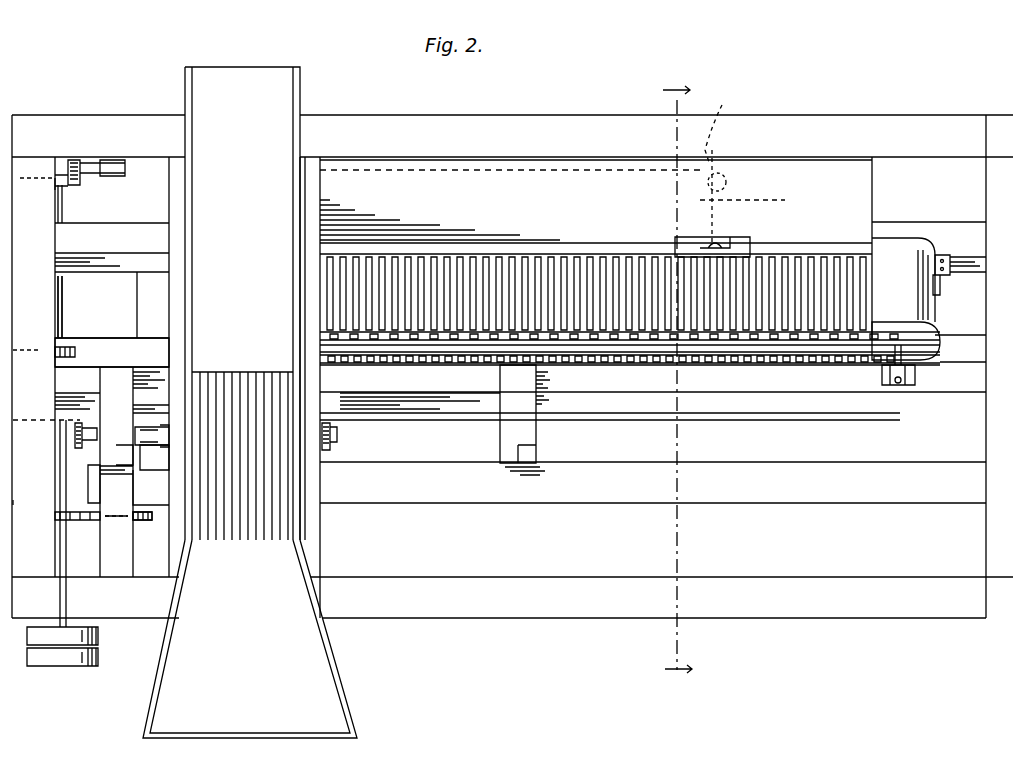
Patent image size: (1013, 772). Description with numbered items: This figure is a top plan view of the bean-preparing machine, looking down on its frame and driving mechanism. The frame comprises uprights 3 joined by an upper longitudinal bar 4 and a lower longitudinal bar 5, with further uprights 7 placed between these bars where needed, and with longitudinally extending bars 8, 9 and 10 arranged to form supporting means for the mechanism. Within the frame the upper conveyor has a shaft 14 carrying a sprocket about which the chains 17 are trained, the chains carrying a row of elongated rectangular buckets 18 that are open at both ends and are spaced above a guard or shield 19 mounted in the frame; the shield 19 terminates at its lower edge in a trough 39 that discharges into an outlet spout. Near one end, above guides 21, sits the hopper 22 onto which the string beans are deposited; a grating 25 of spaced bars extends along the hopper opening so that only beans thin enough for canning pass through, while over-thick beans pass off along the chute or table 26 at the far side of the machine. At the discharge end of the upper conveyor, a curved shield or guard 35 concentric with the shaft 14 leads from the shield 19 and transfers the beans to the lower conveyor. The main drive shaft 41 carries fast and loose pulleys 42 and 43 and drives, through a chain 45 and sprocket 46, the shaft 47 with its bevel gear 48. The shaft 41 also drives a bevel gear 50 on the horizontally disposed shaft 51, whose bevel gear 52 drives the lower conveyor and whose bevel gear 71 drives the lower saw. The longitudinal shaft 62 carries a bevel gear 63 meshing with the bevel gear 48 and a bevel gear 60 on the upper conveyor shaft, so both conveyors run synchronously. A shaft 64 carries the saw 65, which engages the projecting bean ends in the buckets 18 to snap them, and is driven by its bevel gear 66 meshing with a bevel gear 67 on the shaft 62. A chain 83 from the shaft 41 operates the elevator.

The uprights 3 is at (1003, 625).
The upper longitudinal bar 4 is at (843, 115).
The lower longitudinal bar 5 is at (677, 384).
The uprights 7 is at (602, 115).
The longitudinally extending bar 8 is at (947, 380).
The longitudinally extending bar 9 is at (963, 230).
The longitudinally extending bar 10 is at (957, 342).
The shaft 14 is at (905, 332).
The chains 17 is at (612, 370).
The buckets or pockets 18 is at (564, 272).
The guard or shield 19 is at (380, 185).
The guides 21 is at (306, 532).
The hopper 22 is at (325, 690).
The grating 25 is at (238, 375).
The chute or table 26 is at (238, 72).
The curved shield or guard 35 is at (898, 247).
The trough 39 is at (623, 246).
The main drive shaft 41 is at (63, 545).
The fast pulley 42 is at (99, 636).
The loose pulley 43 is at (99, 660).
The chain 45 is at (76, 353).
The sprocket 46 is at (70, 350).
The shaft 47 is at (62, 292).
The bevel gear 48 is at (70, 187).
The bevel gear 50 is at (74, 450).
The horizontally disposed shaft 51 is at (502, 420).
The bevel gear 52 is at (153, 447).
The bevel gear 60 is at (789, 500).
The shaft 62 is at (535, 172).
The bevel gear 63 is at (75, 158).
The shaft 64 is at (755, 196).
The saw 65 is at (740, 252).
The bevel gear 66 is at (728, 175).
The bevel gear 67 is at (722, 165).
The bevel gear 71 is at (340, 448).
The chain 83 is at (146, 522).